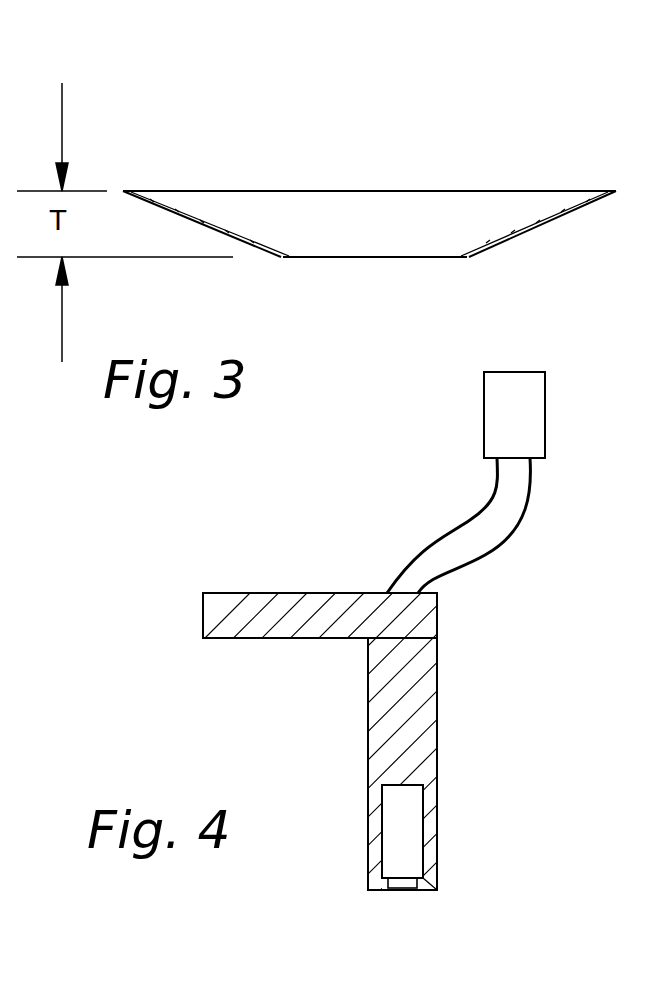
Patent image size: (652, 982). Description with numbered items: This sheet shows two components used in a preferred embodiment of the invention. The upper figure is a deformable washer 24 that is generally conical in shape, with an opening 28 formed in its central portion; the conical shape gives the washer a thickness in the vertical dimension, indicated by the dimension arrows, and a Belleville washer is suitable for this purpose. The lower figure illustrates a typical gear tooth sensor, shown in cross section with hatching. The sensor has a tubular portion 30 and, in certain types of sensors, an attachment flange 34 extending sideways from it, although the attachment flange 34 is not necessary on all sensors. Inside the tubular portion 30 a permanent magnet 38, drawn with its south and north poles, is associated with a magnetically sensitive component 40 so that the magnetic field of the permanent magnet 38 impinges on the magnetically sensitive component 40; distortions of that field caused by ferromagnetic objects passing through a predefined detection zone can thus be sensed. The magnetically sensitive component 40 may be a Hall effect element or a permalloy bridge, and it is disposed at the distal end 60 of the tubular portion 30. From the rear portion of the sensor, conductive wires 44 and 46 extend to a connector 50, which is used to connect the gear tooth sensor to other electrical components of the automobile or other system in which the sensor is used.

In FIG. 3, the deformable washer 24 is at (437, 218).
In FIG. 3, the opening 28 is at (382, 259).
In FIG. 4, the tubular portion 30 is at (437, 707).
In FIG. 4, the attachment flange 34 is at (295, 630).
In FIG. 4, the permanent magnet 38 is at (387, 830).
In FIG. 4, the magnetically sensitive component 40 is at (423, 886).
In FIG. 4, the conductive wire 44 is at (438, 533).
In FIG. 4, the conductive wire 46 is at (507, 545).
In FIG. 4, the connector 50 is at (483, 400).
In FIG. 4, the distal end 60 is at (393, 893).